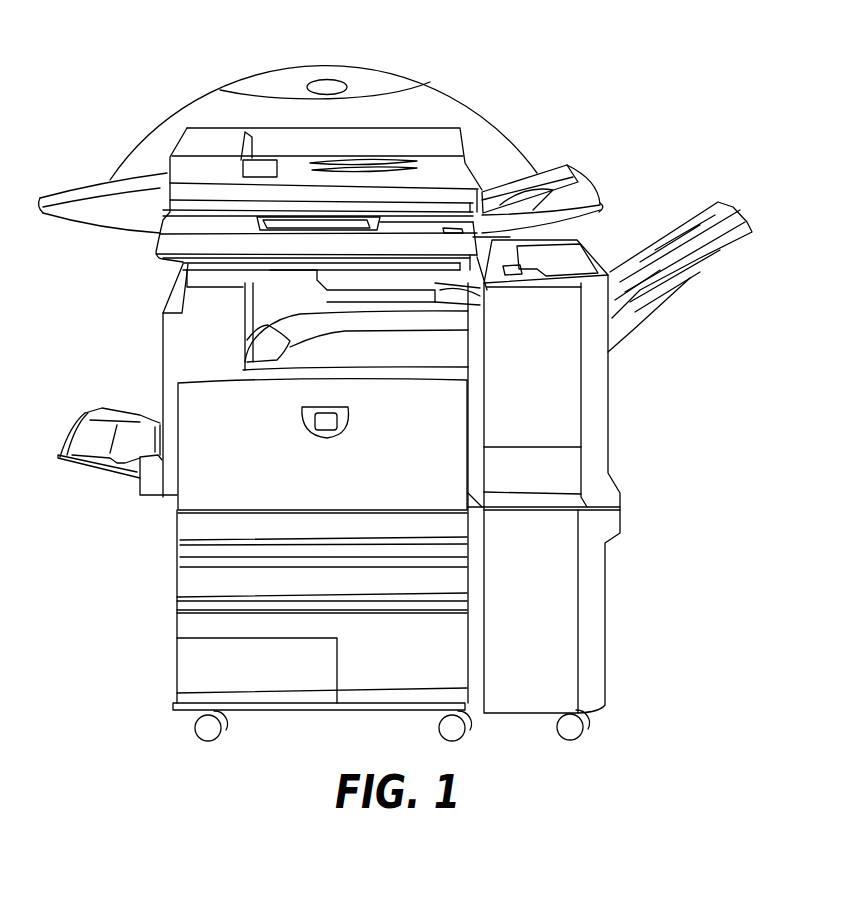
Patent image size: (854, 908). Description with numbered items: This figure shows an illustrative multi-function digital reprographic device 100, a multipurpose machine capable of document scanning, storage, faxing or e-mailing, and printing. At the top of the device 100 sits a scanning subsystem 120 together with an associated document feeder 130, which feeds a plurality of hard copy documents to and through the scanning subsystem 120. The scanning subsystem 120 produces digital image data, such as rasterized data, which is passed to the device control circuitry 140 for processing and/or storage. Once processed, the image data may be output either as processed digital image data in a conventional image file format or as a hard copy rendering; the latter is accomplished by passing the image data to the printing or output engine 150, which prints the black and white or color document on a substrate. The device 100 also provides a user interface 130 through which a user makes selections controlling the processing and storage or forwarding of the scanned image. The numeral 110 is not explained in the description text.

The multi-function digital reprographic device 100 is at (433, 46).
The scanner / document handler 110 is at (400, 127).
The scanning subsystem 120 is at (157, 190).
The document feeder 130 is at (322, 227).
The device control circuitry 140 is at (565, 598).
The printing or output engine 150 is at (218, 417).